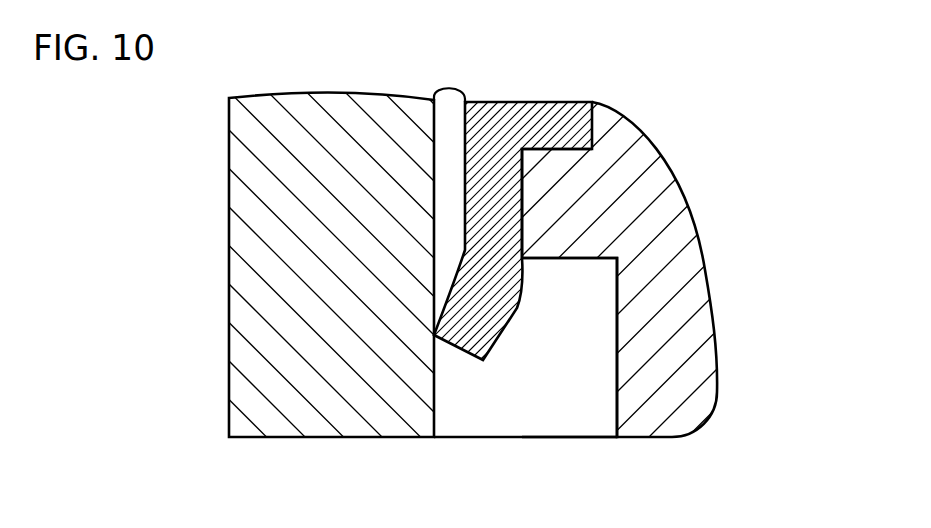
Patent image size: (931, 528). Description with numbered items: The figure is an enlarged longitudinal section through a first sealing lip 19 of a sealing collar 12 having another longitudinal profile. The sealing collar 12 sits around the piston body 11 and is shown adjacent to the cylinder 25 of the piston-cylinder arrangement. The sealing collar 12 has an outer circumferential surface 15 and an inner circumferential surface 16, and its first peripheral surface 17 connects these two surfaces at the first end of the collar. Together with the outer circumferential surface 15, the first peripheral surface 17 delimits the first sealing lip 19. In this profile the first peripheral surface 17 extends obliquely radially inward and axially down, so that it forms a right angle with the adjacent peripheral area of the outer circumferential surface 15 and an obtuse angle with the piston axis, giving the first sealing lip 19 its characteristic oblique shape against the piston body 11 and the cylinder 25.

The piston body 11 is at (680, 188).
The sealing collar 12 is at (533, 94).
The outer circumferential surface 15 is at (460, 272).
The inner circumferential surface 16 is at (513, 308).
The first peripheral surface 17 is at (458, 346).
The first sealing lip 19 is at (434, 335).
The cylinder 25 is at (212, 169).